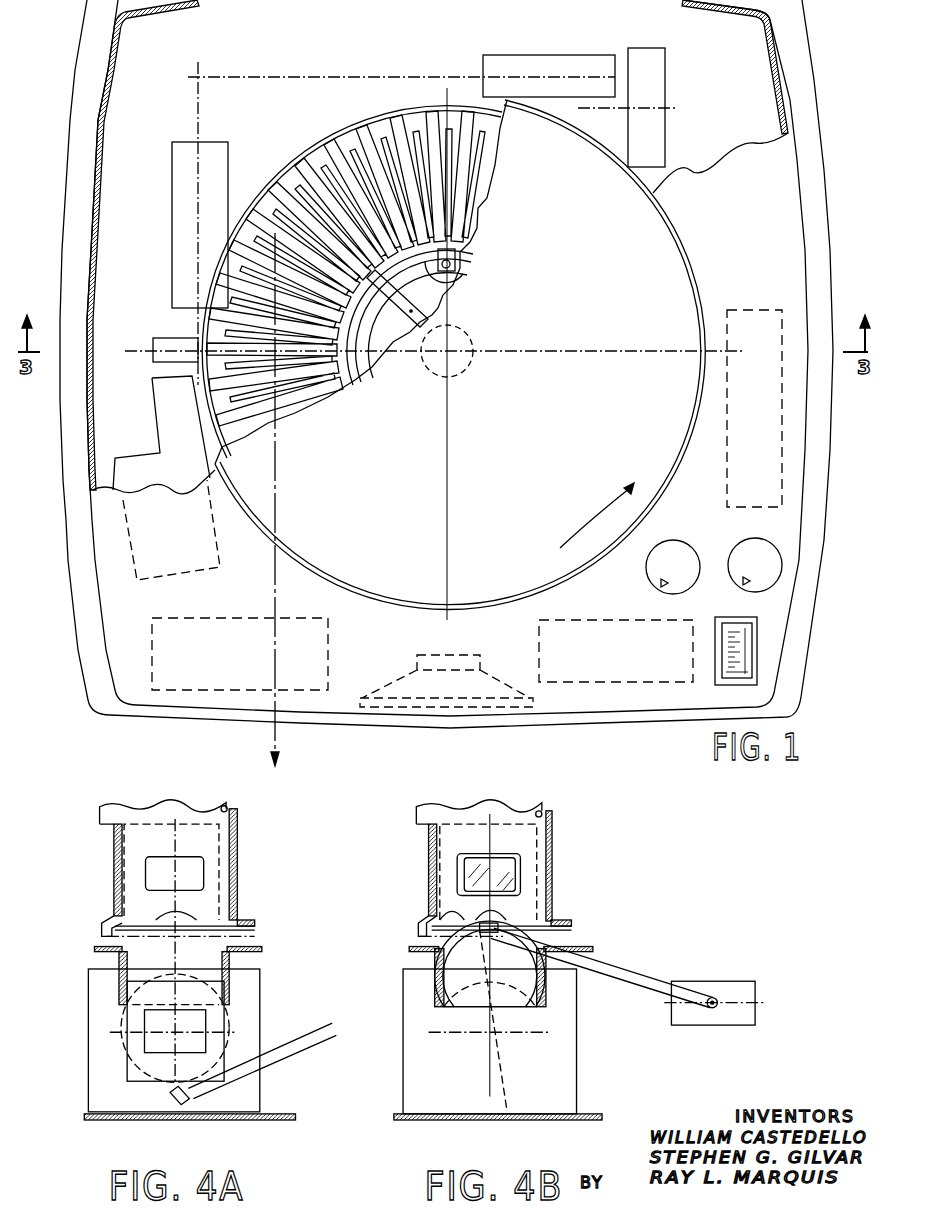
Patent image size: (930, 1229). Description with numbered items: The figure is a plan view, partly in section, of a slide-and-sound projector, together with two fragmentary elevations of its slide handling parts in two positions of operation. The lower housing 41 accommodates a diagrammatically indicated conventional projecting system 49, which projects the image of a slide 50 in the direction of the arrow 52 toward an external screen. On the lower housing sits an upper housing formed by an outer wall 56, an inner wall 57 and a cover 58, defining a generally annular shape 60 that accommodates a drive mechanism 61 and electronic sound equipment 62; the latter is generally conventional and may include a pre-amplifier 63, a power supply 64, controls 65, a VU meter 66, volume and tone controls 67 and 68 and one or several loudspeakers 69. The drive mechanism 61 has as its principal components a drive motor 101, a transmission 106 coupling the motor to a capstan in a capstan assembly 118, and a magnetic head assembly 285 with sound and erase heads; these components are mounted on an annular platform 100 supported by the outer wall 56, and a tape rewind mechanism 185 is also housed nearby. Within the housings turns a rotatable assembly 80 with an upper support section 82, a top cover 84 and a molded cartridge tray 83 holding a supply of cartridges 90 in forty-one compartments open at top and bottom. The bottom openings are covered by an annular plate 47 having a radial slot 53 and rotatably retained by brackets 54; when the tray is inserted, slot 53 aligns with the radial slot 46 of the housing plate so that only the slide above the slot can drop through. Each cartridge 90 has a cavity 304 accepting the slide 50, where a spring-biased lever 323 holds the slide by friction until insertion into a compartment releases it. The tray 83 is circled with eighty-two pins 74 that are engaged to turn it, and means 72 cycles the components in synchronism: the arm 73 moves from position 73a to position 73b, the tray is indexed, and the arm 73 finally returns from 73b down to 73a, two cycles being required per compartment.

In FIG. 1, the annular shape 60 is at (371, 21).
In FIG. 1, the outer wall 56 is at (83, 460).
In FIG. 1, the annular platform 100 is at (767, 123).
In FIG. 1, the arrow 52 is at (277, 733).
In FIG. 1, the top cover 84 is at (627, 311).
In FIG. 1, the rotatable assembly 80 is at (680, 227).
In FIG. 1, the upper support section 82 is at (458, 328).
In FIG. 1, the inner wall 57 is at (358, 122).
In FIG. 1, the radial slot 46 is at (342, 353).
In FIG. 4A, the radial slot 46 is at (127, 957).
In FIG. 4B, the radial slot 46 is at (517, 973).
In FIG. 1, the brackets 54 is at (465, 258).
In FIG. 1, the annular plate 47 is at (448, 286).
In FIG. 4A, the annular plate 47 is at (240, 933).
In FIG. 4B, the annular plate 47 is at (560, 933).
In FIG. 1, the capstan assembly 118 is at (175, 193).
In FIG. 1, the magnetic head assembly 285 is at (163, 338).
In FIG. 1, the tape rewind mechanism 185 is at (147, 457).
In FIG. 1, the transmission 106 is at (517, 62).
In FIG. 1, the drive mechanism 61 is at (682, 66).
In FIG. 1, the drive motor 101 is at (655, 143).
In FIG. 1, the cover 58 is at (768, 271).
In FIG. 1, the controls 65 is at (783, 440).
In FIG. 1, the power supply 64 is at (167, 615).
In FIG. 1, the pre-amplifier 63 is at (570, 620).
In FIG. 1, the volume control 67 is at (668, 542).
In FIG. 1, the tone control 68 is at (745, 545).
In FIG. 1, the electronic sound equipment 62 is at (768, 605).
In FIG. 1, the VU meter 66 is at (745, 655).
In FIG. 1, the loudspeaker 69 is at (500, 707).
In FIG. 4A, the cartridge 90 is at (127, 808).
In FIG. 4B, the cartridge 90 is at (427, 813).
In FIG. 4A, the cartridge carrier or tray 83 is at (110, 882).
In FIG. 4B, the cartridge carrier or tray 83 is at (598, 878).
In FIG. 4A, the lever 323 is at (224, 808).
In FIG. 4B, the lever 323 is at (540, 813).
In FIG. 4A, the cavity 304 is at (130, 845).
In FIG. 4B, the cavity 304 is at (518, 842).
In FIG. 4A, the radial slot 53 is at (205, 917).
In FIG. 4B, the radial slot 53 is at (447, 903).
In FIG. 4A, the pins 74 is at (100, 923).
In FIG. 4B, the pins 74 is at (422, 928).
In FIG. 4A, the projecting system 49 is at (97, 985).
In FIG. 4B, the projecting system 49 is at (555, 1067).
In FIG. 4A, the slide 50 is at (133, 1037).
In FIG. 4B, the slide 50 is at (460, 872).
In FIG. 4A, the arm 73 is at (287, 1033).
In FIG. 4B, the arm 73 is at (610, 958).
In FIG. 4A, the arm position 73a is at (186, 1092).
In FIG. 4B, the arm position 73b is at (477, 937).
In FIG. 4B, the means 72 is at (665, 1010).
In FIG. 4A, the lower housing 41 is at (106, 1118).
In FIG. 4B, the lower housing 41 is at (412, 1118).